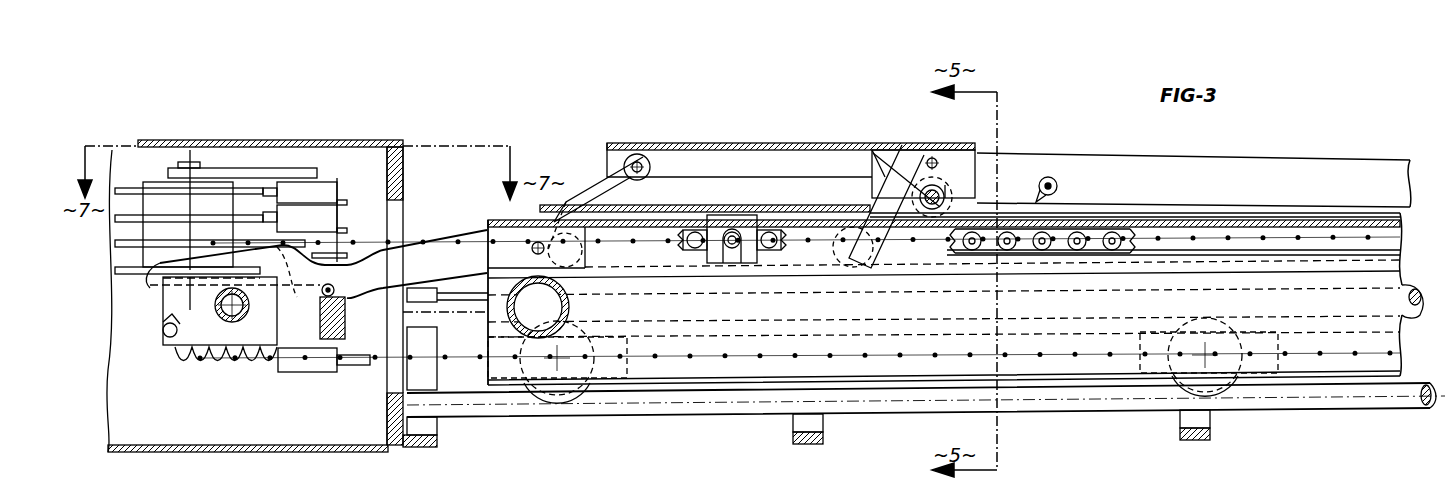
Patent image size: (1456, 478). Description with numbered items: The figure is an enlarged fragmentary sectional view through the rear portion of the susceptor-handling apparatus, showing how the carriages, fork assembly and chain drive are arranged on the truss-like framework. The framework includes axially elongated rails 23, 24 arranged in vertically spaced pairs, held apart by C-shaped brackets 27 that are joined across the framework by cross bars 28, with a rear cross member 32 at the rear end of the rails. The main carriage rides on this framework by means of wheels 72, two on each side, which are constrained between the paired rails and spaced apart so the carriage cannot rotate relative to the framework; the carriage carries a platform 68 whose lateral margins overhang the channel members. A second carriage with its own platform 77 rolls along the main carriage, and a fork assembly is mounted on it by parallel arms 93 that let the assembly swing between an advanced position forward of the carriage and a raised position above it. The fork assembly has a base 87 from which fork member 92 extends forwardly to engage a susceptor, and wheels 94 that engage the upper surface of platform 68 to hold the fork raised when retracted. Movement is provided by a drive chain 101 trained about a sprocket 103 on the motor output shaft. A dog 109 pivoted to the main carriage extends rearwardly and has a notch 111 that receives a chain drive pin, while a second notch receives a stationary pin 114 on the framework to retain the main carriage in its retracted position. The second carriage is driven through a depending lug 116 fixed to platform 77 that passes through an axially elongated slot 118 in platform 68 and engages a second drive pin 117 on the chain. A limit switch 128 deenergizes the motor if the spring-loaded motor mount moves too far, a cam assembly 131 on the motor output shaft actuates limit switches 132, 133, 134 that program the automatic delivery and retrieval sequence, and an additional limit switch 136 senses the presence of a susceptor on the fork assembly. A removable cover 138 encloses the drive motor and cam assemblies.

The rail 23 is at (1421, 290).
The rail 24 is at (891, 408).
The C-shaped bracket 27 is at (433, 428).
The cross bar 28 is at (420, 448).
The rear cross member 32 is at (404, 178).
The platform 68 is at (506, 225).
The wheel 72 is at (557, 393).
The platform 77 is at (564, 210).
The base 87 is at (757, 140).
The fork member 92 is at (1276, 162).
The parallel arm 93 is at (632, 150).
The wheel 94 is at (948, 196).
The drive chain 101 is at (1128, 245).
The sprocket 103 is at (222, 360).
The dog 109 is at (463, 253).
The notch 111 is at (163, 330).
The stationary pin 114 is at (346, 318).
The depending lug 116 is at (713, 220).
The drive pin 117 is at (733, 255).
The slot 118 is at (334, 287).
The limit switch 128 is at (366, 365).
The cam assembly 131 is at (135, 233).
The limit switch 132 is at (298, 182).
The limit switch 133 is at (322, 212).
The limit switch 134 is at (335, 245).
The limit switch 136 is at (1052, 178).
The removable cover 138 is at (206, 140).